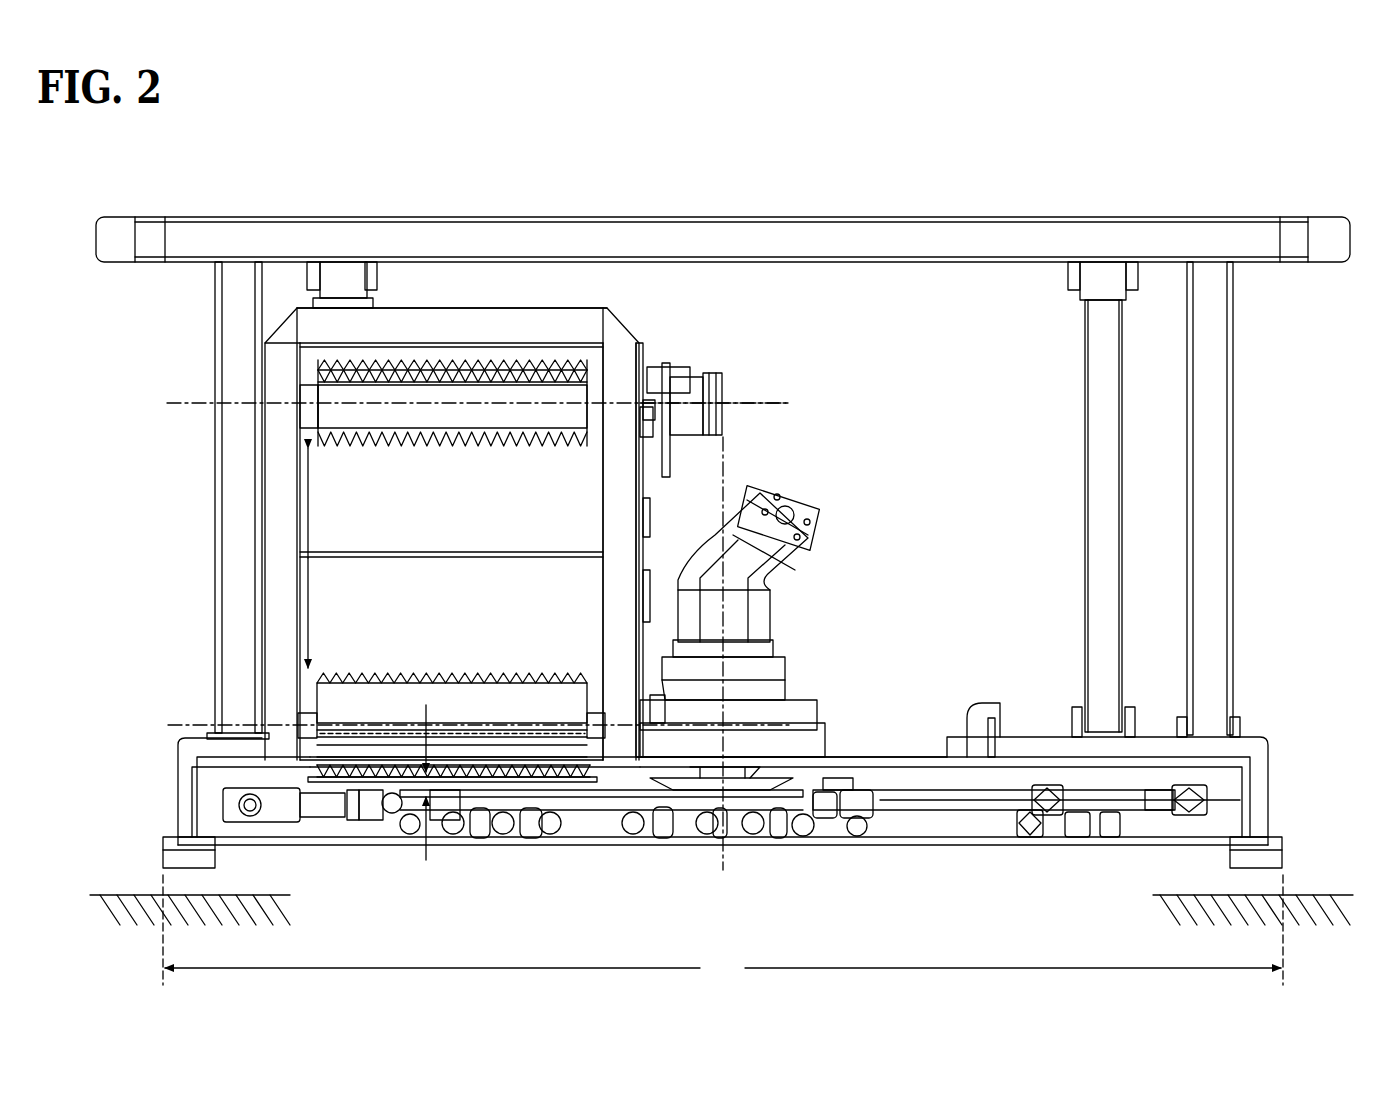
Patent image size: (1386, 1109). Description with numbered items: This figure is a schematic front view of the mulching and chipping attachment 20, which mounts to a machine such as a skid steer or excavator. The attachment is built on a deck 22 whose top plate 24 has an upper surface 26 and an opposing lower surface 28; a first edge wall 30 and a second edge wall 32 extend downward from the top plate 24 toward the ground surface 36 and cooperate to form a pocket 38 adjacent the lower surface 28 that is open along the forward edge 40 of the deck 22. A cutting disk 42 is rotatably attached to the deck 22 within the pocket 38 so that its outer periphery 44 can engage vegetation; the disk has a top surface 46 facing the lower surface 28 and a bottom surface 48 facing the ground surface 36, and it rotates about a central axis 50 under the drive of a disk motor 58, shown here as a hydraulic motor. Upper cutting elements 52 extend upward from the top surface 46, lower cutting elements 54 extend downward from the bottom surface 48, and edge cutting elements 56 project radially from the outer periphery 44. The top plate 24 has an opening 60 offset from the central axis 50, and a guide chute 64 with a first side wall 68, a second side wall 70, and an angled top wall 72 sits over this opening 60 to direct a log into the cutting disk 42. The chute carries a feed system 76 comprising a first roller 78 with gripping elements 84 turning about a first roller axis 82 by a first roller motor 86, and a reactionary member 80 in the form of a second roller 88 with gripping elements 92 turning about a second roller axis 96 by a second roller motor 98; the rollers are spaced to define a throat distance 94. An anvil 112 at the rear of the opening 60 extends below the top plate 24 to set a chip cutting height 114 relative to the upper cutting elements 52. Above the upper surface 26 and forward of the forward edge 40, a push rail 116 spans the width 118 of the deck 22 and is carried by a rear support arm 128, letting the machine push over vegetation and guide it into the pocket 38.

The mulching and chipping attachment 20 is at (803, 155).
The deck 22 is at (900, 755).
The top plate 24 is at (878, 760).
The upper surface 26 is at (950, 757).
The lower surface 28 is at (1100, 770).
The first edge wall 30 is at (180, 777).
The second edge wall 32 is at (1262, 770).
The ground surface 36 is at (130, 895).
The pocket 38 is at (1205, 825).
The forward edge 40 is at (1173, 762).
The cutting disk 42 is at (912, 800).
The outer periphery 44 is at (675, 797).
The top surface 46 is at (1140, 780).
The bottom surface 48 is at (990, 760).
The central axis 50 is at (733, 455).
The upper cutting elements 52 is at (853, 790).
The lower cutting elements 54 is at (525, 825).
The edge cutting elements 56 is at (375, 805).
The disk motor 58 is at (820, 556).
The opening 60 is at (335, 755).
The guide chute 64 is at (440, 305).
The first side wall 68 is at (310, 482).
The second side wall 70 is at (600, 488).
The top wall 72 is at (500, 335).
The feed system 76 is at (455, 792).
The first roller 78 is at (408, 415).
The reactionary member 80 is at (355, 700).
The first roller axis 82 is at (757, 395).
The gripping elements 84 is at (470, 440).
The first roller motor 86 is at (695, 375).
The second roller 88 is at (503, 700).
The gripping elements 92 is at (487, 700).
The throat distance 94 is at (310, 545).
The second roller axis 96 is at (180, 725).
The second roller motor 98 is at (660, 705).
The anvil 112 is at (360, 760).
The chip cutting height 114 is at (426, 860).
The push rail 116 is at (957, 230).
The width 118 is at (723, 930).
The rear support arm 128 is at (1100, 540).